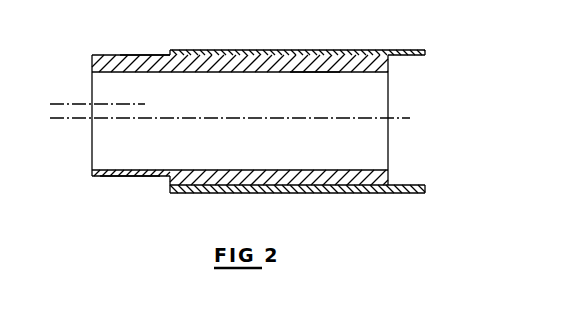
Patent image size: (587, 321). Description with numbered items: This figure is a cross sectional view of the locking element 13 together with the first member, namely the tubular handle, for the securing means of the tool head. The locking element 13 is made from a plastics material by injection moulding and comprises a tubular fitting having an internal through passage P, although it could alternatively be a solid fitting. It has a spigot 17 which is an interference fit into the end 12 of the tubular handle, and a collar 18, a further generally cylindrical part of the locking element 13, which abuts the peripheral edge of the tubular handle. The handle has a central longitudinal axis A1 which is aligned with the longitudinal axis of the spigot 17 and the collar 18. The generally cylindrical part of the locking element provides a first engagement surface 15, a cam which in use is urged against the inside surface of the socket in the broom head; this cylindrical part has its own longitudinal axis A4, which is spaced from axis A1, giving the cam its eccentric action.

The internal through passage P is at (228, 170).
The end 12 is at (318, 50).
The locking element 13 is at (147, 55).
The first engagement surface 15 is at (128, 177).
The spigot 17 is at (312, 73).
The collar 18 is at (185, 194).
The central longitudinal axis A1 is at (400, 118).
The longitudinal axis A4 is at (62, 104).